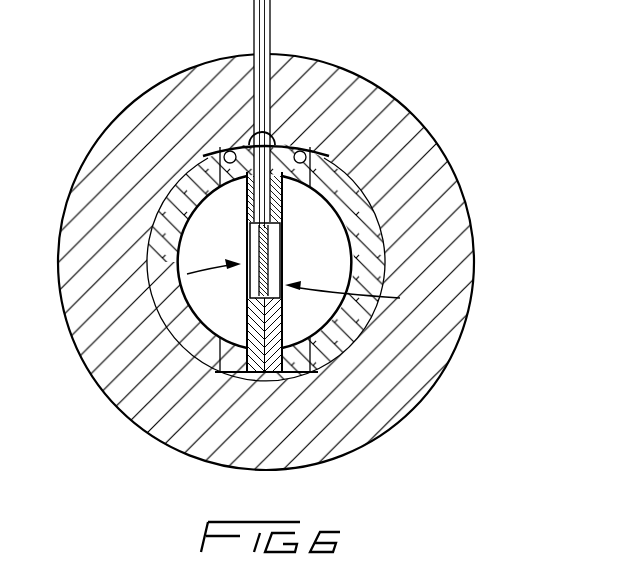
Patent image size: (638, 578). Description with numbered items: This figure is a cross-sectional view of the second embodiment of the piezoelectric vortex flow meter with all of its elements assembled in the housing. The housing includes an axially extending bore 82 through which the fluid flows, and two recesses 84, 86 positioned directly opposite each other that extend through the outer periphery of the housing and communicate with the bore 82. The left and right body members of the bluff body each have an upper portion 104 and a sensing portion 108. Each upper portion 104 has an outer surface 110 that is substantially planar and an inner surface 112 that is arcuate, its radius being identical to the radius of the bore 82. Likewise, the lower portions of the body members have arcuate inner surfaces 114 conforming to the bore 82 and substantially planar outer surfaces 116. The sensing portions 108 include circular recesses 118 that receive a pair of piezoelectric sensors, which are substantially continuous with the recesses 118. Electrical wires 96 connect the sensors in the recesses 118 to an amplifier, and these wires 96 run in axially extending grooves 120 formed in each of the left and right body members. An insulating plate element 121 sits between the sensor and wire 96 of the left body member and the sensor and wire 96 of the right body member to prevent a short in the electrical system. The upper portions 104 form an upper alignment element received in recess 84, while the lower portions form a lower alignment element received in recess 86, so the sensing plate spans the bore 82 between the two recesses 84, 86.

The axially extending bore 82 is at (347, 258).
The recess 84 is at (309, 182).
The recess 86 is at (300, 338).
The electrical wires 96 is at (267, 25).
The upper portion 104 is at (230, 152).
The sensing portion 108 is at (480, 296).
The outer surface 110 is at (229, 183).
The inner surface 112 is at (224, 155).
The inner surface 114 is at (237, 345).
The outer surface 116 is at (233, 378).
The circular recess 118 is at (256, 271).
The axially extending groove 120 is at (248, 222).
The insulating plate element 121 is at (266, 263).